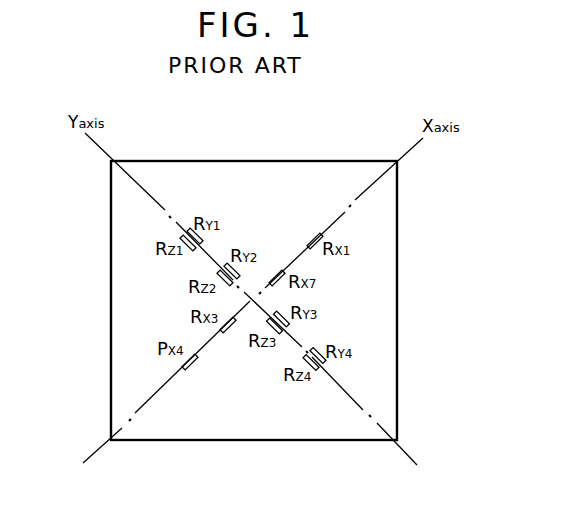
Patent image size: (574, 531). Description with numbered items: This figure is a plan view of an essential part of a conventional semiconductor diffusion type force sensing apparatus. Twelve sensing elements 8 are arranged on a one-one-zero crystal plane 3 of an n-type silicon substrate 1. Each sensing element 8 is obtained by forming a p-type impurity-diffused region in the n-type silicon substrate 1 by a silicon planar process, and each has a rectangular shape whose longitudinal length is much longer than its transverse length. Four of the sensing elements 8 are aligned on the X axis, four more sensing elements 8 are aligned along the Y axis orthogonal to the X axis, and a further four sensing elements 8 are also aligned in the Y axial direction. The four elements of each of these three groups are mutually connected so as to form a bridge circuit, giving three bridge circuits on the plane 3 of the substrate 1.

The n-type silicon substrate 1 is at (240, 420).
The {110} plane 3 is at (111, 302).
The sensing element 8 is at (192, 235).